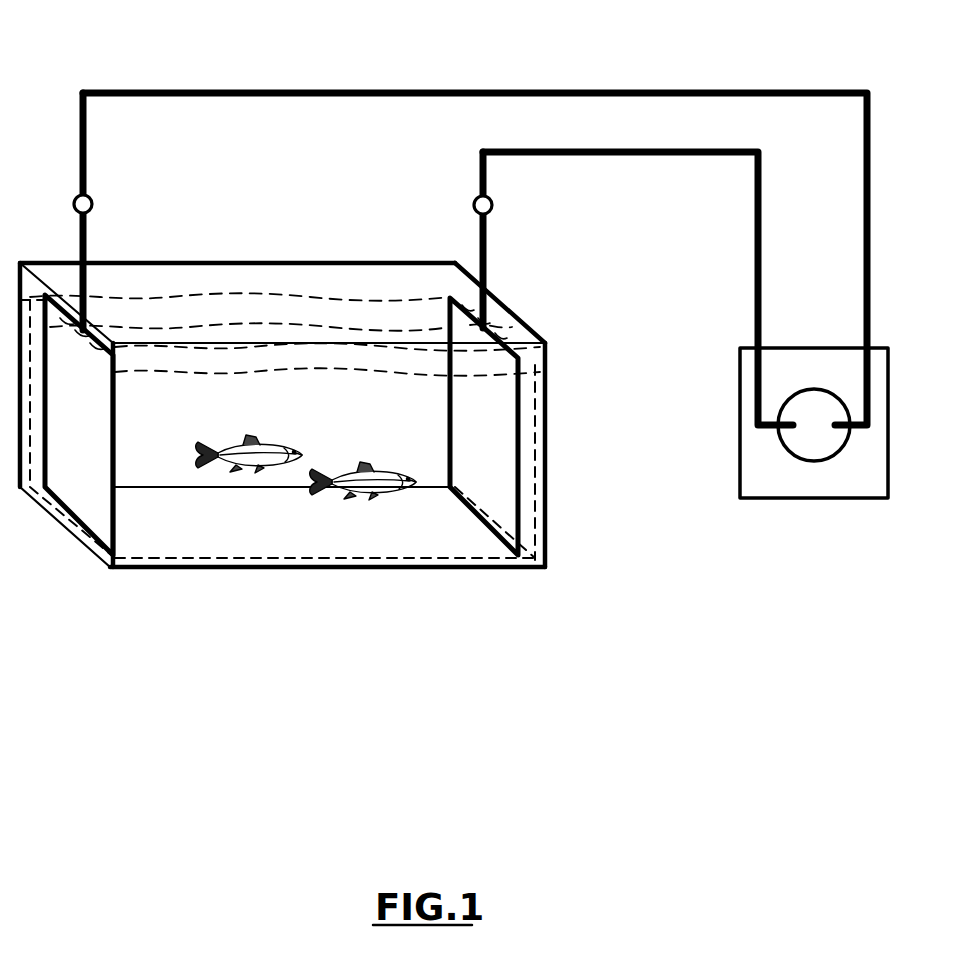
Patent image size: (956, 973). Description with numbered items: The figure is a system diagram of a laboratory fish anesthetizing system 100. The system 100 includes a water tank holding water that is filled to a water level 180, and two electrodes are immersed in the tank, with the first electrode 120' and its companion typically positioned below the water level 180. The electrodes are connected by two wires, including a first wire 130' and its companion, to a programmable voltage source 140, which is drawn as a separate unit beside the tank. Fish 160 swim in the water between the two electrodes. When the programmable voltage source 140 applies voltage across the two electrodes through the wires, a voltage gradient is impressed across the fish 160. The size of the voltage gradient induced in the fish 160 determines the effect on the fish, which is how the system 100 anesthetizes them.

The system 100 is at (454, 343).
The electrode 120' is at (120, 324).
The wire 130' is at (475, 216).
The programmable voltage source 140 is at (820, 482).
The fish 160 is at (263, 467).
The water level 180 is at (547, 438).